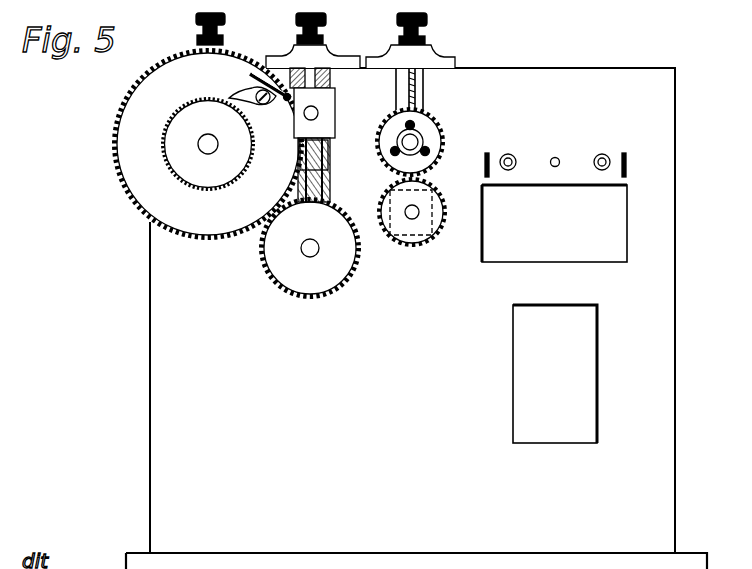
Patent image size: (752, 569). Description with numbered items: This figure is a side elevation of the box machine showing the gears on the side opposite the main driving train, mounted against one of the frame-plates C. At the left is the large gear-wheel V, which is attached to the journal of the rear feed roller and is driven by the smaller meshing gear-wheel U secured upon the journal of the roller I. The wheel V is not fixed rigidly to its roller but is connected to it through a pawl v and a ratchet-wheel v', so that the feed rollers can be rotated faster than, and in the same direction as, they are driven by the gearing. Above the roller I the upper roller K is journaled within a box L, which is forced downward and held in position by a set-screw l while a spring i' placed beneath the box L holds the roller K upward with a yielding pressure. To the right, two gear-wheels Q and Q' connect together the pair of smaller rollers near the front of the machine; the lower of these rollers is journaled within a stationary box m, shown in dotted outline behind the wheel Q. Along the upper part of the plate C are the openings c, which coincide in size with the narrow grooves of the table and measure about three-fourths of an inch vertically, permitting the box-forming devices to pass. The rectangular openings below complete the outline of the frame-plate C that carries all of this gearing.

The frame-plate C is at (416, 318).
The gear-wheel V is at (208, 144).
The ratchet-wheel v' is at (208, 144).
The pawl v is at (257, 86).
The gear-wheel U is at (310, 248).
The set-screw l is at (327, 28).
The roller K is at (330, 150).
The box L is at (336, 108).
The roller I is at (332, 196).
The spring i' is at (326, 155).
The gear-wheel Q' is at (430, 121).
The gear-wheel Q is at (412, 225).
The stationary box m is at (432, 207).
The opening c is at (489, 163).